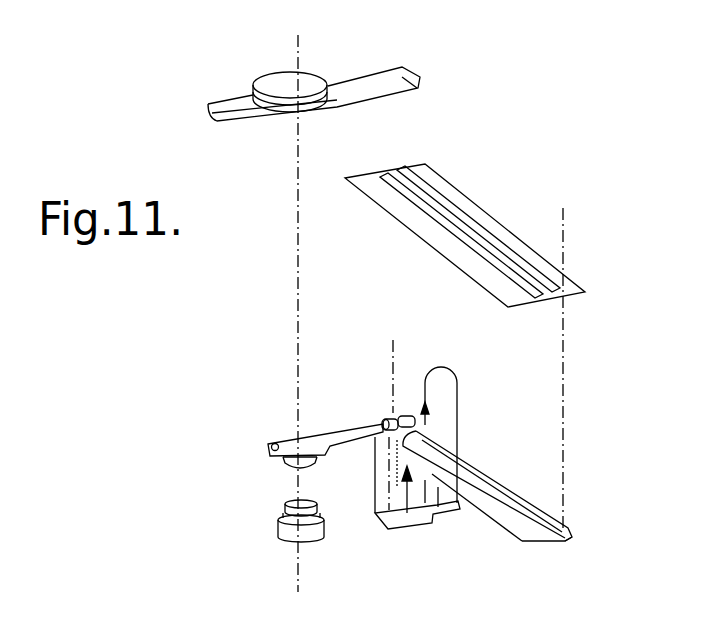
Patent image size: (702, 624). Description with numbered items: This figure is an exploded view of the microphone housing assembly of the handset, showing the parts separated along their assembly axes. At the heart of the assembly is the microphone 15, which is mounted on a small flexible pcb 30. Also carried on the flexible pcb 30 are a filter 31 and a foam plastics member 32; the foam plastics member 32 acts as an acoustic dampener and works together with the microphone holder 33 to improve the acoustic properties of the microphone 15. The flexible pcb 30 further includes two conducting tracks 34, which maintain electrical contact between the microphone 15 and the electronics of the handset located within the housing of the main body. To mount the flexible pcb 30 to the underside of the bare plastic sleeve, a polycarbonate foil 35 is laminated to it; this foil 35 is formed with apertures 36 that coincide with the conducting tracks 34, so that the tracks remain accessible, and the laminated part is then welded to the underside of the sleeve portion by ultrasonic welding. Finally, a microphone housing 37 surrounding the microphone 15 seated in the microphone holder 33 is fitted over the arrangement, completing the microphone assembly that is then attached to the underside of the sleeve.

The microphone 15 is at (283, 470).
The flexible pcb 30 is at (515, 485).
The filter 31 is at (404, 413).
The foam plastics member 32 is at (398, 527).
The microphone holder 33 is at (317, 537).
The conducting tracks 34 is at (572, 538).
The polycarbonate foil 35 is at (518, 191).
The apertures 36 is at (298, 305).
The microphone housing 37 is at (306, 74).